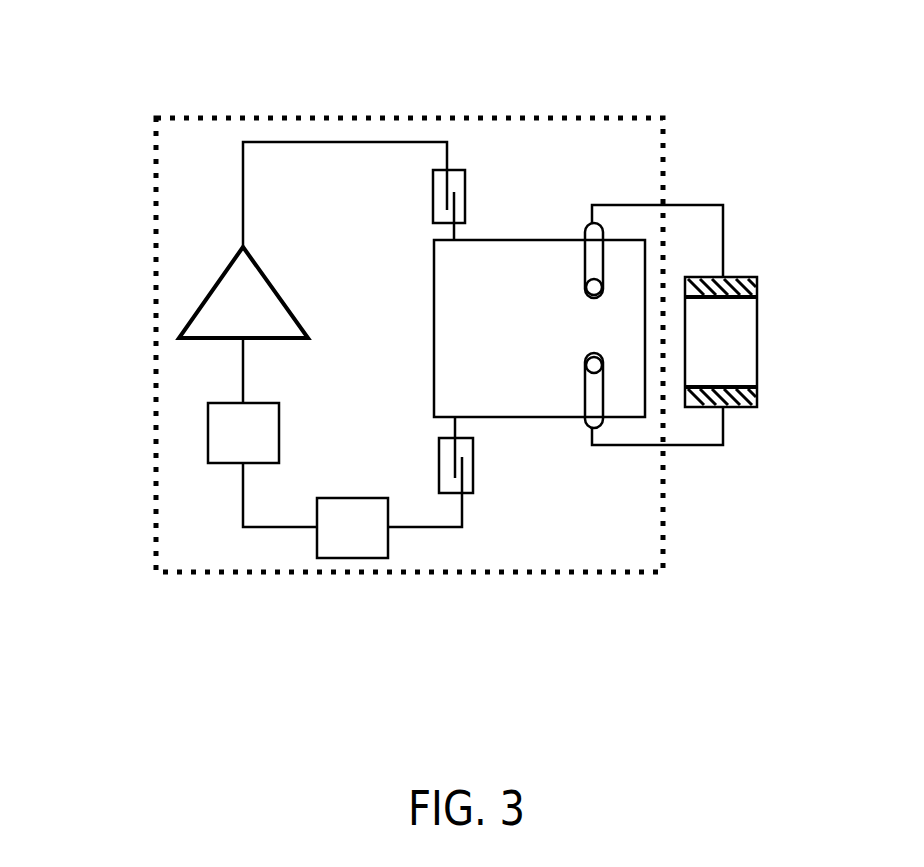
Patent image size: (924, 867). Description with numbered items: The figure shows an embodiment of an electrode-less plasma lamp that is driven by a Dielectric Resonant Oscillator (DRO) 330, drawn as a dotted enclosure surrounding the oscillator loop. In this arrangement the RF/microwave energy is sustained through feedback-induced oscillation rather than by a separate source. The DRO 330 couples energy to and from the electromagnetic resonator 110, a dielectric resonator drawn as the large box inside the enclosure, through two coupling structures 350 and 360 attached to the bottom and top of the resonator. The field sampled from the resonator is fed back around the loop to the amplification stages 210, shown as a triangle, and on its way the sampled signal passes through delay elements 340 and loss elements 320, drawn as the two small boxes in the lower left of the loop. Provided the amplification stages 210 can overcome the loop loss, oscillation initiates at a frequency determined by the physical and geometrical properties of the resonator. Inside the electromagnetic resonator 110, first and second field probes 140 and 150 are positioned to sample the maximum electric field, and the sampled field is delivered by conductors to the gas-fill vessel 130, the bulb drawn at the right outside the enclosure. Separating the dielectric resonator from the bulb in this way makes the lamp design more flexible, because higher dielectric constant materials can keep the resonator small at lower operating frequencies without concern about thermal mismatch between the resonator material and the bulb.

The electromagnetic resonator 110 is at (490, 280).
The gas-fill vessel 130 is at (758, 348).
The first field probe 140 is at (595, 407).
The second field probe 150 is at (597, 262).
The amplification stages 210 is at (243, 297).
The loss elements 320 is at (225, 442).
The Dielectric Resonant Oscillator (DRO) 330 is at (225, 585).
The delay elements 340 is at (348, 530).
The coupling structure 350 is at (473, 478).
The coupling structure 360 is at (437, 187).